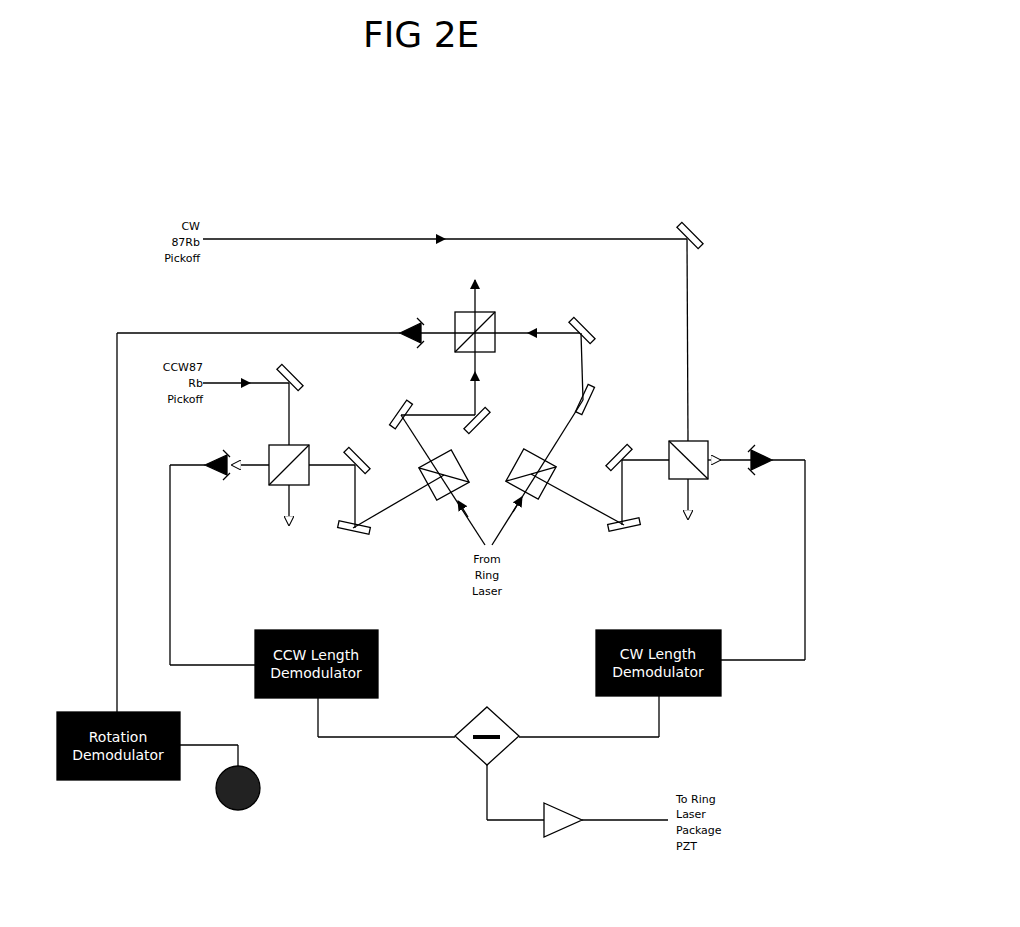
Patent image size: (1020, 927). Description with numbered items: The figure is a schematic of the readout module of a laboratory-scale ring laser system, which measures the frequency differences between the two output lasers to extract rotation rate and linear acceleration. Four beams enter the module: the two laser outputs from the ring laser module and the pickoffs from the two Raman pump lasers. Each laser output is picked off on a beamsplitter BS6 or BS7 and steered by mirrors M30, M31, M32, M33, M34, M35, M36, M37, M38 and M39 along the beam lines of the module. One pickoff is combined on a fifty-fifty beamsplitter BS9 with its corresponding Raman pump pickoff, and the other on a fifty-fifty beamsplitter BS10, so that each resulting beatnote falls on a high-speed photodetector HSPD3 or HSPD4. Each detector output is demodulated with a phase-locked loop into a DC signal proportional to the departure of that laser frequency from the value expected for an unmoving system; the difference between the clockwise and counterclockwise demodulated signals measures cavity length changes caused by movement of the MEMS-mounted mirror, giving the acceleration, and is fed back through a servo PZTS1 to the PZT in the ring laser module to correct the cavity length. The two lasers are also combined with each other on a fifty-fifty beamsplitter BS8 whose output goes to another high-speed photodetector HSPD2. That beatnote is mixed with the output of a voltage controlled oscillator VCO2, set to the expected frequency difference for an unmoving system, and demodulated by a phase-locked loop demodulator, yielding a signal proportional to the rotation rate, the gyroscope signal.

The mirror M30 is at (392, 414).
The mirror M31 is at (486, 421).
The mirror M32 is at (597, 399).
The mirror M33 is at (591, 330).
The mirror M34 is at (354, 536).
The mirror M35 is at (363, 459).
The mirror M36 is at (300, 377).
The mirror M37 is at (626, 533).
The mirror M38 is at (612, 457).
The mirror M39 is at (699, 235).
The pickoff beamsplitter BS6 is at (444, 485).
The pickoff beamsplitter BS7 is at (531, 485).
The 50/50 beamsplitter BS8 is at (480, 341).
The 50/50 beamsplitter BS9 is at (295, 474).
The 50/50 beamsplitter BS10 is at (684, 470).
The high-speed photodetector HSPD2 is at (413, 340).
The high-speed photodetector HSPD3 is at (218, 474).
The high-speed photodetector HSPD4 is at (765, 469).
The voltage controlled oscillator VCO2 is at (238, 798).
The servo PZTS1 is at (567, 813).